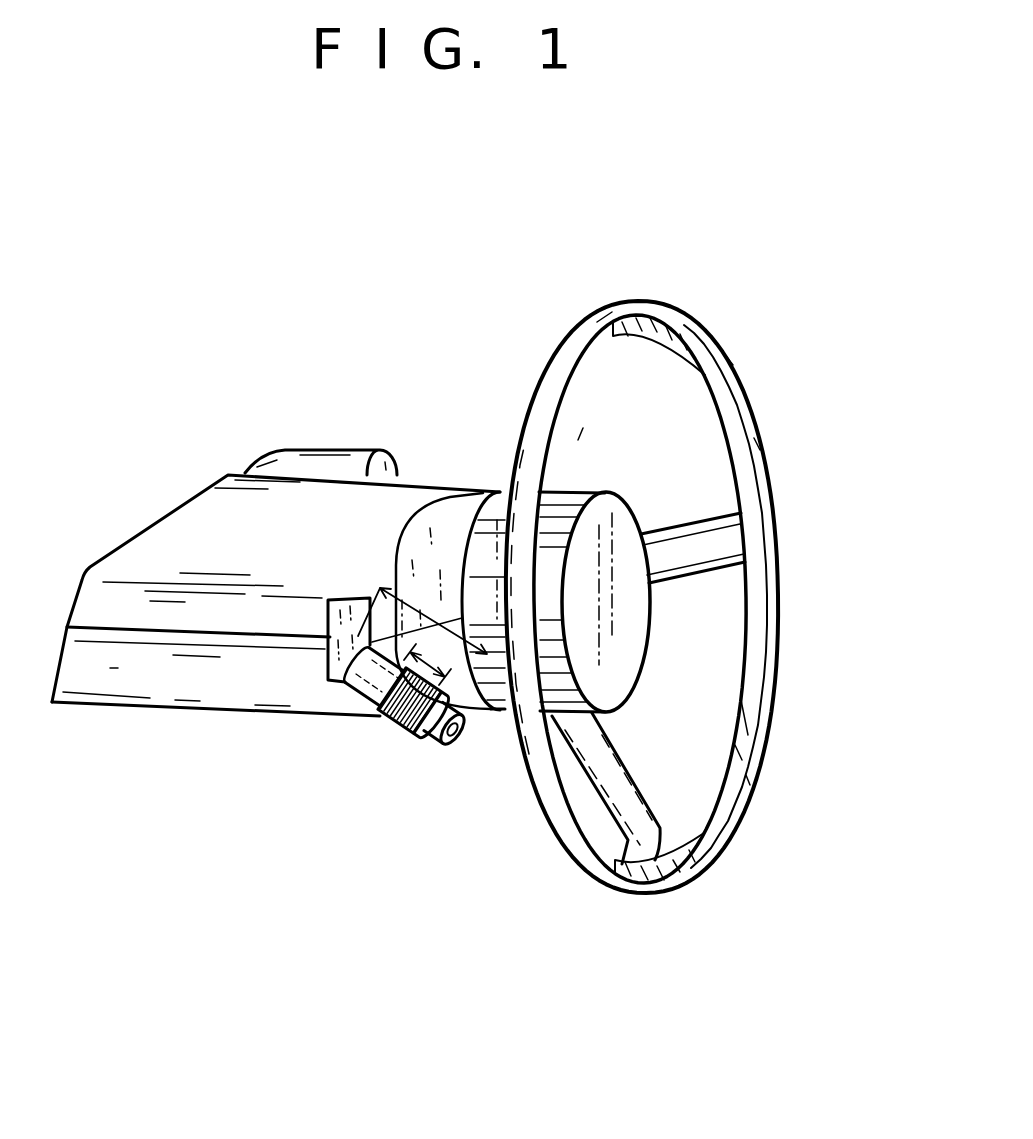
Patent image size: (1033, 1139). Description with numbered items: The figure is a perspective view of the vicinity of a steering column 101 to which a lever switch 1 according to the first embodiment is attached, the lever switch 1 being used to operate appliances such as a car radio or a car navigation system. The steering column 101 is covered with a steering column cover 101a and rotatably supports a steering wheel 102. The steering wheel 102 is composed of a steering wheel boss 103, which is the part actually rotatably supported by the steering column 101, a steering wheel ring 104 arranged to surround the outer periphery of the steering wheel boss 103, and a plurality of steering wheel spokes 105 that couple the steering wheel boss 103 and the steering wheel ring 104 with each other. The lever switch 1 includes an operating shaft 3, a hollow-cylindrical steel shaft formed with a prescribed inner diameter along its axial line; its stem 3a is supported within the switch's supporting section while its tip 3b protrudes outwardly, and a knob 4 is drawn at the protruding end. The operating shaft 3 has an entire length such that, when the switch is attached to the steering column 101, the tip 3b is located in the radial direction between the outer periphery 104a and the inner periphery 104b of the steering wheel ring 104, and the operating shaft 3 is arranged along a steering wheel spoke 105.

The lever switch 1 is at (363, 772).
The operating shaft 3 is at (358, 672).
The stem 3a is at (342, 662).
The tip 3b is at (473, 728).
The knob 4 is at (405, 737).
The steering column 101 is at (433, 471).
The steering column cover 101a is at (172, 700).
The steering wheel 102 is at (752, 385).
The steering wheel boss 103 is at (647, 507).
The steering wheel ring 104 is at (672, 892).
The outer periphery 104a is at (740, 827).
The inner periphery 104b is at (735, 735).
The steering wheel spoke 105 is at (707, 573).